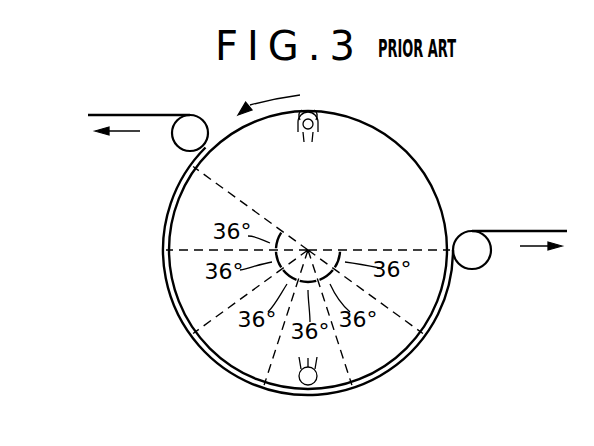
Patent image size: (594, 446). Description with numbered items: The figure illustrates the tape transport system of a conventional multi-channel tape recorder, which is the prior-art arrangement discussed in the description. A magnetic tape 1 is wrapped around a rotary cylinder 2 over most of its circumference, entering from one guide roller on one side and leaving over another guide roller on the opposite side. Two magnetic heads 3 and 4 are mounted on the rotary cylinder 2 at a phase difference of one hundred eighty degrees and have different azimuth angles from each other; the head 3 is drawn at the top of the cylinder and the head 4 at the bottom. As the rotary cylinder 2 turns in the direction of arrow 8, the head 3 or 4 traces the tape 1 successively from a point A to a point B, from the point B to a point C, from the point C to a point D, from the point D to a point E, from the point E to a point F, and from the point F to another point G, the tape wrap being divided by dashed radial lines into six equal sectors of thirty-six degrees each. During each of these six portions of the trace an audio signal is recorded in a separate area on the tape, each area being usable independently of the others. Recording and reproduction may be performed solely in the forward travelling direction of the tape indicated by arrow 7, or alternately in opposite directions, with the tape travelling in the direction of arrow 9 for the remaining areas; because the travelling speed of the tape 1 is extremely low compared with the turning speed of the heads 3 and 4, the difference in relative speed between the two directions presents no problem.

The magnetic tape 1 is at (537, 230).
The rotary cylinder 2 is at (407, 150).
The magnetic head 3 is at (318, 118).
The magnetic head 4 is at (318, 386).
The arrow 7 is at (540, 249).
The arrow 8 is at (252, 99).
The arrow 9 is at (120, 134).
The point A is at (192, 167).
The point B is at (163, 249).
The point C is at (189, 332).
The point D is at (262, 388).
The point E is at (354, 388).
The point F is at (426, 335).
The point G is at (451, 240).